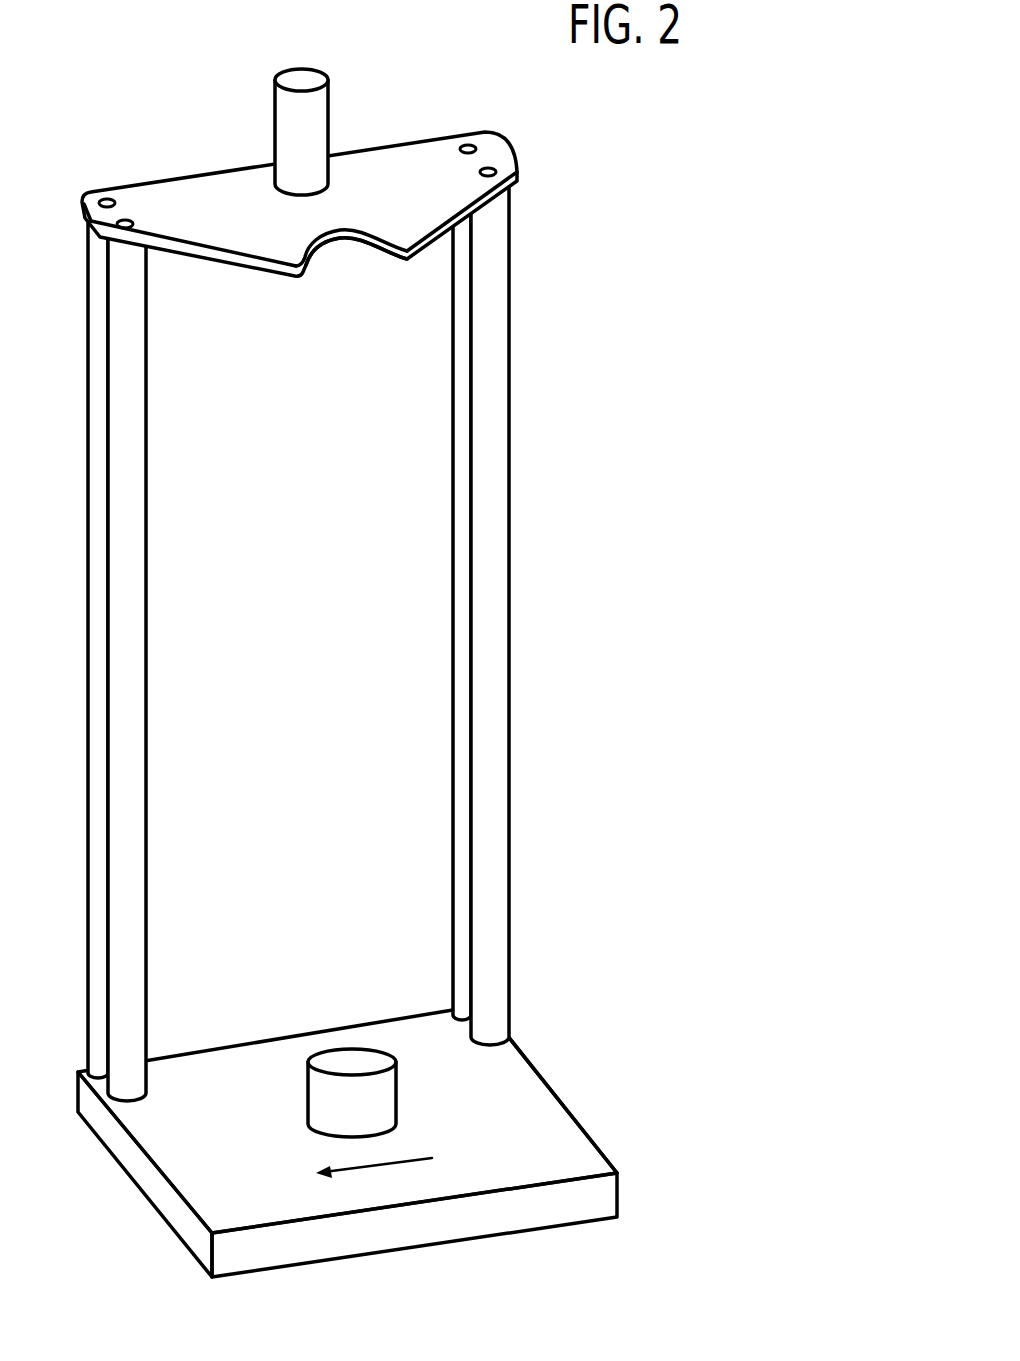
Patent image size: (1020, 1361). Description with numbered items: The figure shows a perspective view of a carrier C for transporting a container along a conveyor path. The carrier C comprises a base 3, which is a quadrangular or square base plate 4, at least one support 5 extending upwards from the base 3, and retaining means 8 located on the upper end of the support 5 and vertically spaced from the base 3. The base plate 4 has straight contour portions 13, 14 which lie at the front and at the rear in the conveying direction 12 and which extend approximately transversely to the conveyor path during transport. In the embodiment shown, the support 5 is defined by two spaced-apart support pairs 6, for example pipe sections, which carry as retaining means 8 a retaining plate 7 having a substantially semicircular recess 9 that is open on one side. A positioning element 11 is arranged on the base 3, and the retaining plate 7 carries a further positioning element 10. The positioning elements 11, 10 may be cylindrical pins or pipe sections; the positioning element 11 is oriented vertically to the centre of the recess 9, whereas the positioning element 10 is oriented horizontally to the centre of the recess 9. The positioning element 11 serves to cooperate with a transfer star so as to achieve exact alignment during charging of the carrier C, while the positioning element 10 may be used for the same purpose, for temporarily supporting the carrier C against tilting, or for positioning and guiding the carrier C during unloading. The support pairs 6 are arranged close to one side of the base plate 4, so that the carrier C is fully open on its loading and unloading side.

The base 3 is at (365, 1131).
The base plate 4 is at (567, 1145).
The support 5 is at (520, 592).
The support pairs 6 is at (485, 598).
The retaining plate 7 is at (299, 243).
The retaining means 8 is at (299, 231).
The recess 9 is at (352, 242).
The positioning element 10 is at (320, 108).
The positioning element 11 is at (390, 1095).
The conveying direction 12 is at (388, 1163).
The straight contour portion 13 is at (160, 1203).
The straight contour portion 14 is at (553, 1092).
The carrier C is at (341, 583).